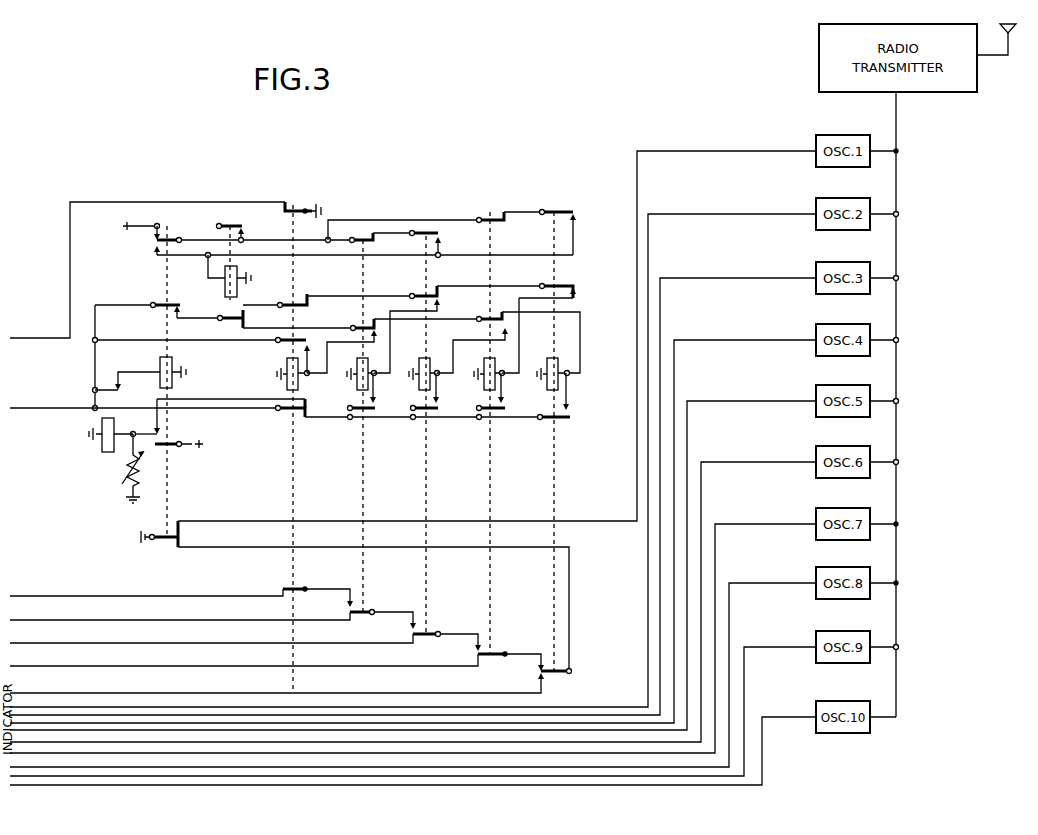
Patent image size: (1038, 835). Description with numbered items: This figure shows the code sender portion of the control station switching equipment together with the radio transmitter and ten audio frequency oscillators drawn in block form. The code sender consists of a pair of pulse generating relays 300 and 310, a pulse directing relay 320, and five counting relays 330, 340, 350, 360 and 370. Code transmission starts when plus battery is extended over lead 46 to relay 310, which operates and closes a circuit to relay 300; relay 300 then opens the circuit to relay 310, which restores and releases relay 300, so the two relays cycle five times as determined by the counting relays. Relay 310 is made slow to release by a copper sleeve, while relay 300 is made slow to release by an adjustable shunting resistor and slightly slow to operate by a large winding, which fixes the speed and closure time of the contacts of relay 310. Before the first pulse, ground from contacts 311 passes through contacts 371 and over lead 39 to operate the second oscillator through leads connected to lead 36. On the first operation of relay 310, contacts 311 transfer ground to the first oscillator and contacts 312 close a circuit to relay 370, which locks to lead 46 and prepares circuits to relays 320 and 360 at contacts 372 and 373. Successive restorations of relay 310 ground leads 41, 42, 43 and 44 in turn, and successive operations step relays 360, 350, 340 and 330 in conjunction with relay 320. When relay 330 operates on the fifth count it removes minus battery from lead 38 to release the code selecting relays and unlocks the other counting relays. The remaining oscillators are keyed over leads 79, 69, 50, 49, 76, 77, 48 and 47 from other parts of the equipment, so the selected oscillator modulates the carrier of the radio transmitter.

The lead 36 is at (413, 452).
The lead 79 is at (413, 488).
The lead 69 is at (413, 523).
The lead 50 is at (413, 557).
The lead 49 is at (413, 594).
The lead 76 is at (413, 630).
The lead 77 is at (413, 667).
The lead 48 is at (413, 703).
The lead 47 is at (413, 741).
The lead 38 is at (147, 272).
The lead 46 is at (52, 401).
The lead 44 is at (181, 593).
The lead 43 is at (213, 616).
The lead 42 is at (245, 639).
The lead 41 is at (277, 662).
The lead 39 is at (277, 685).
The pulse generating relay 300 is at (100, 450).
The pulse generating relay 310 is at (173, 360).
The contacts of relay 310 311 is at (167, 549).
The contacts of relay 310 312 is at (172, 316).
The pulse directing relay 320 is at (238, 292).
The counting relay 330 is at (283, 380).
The counting relay 340 is at (355, 386).
The counting relay 350 is at (417, 386).
The counting relay 360 is at (482, 386).
The counting relay 370 is at (546, 386).
The contacts of relay 370 371 is at (547, 677).
The contacts of relay 370 372 is at (575, 215).
The contacts of relay 370 373 is at (575, 292).